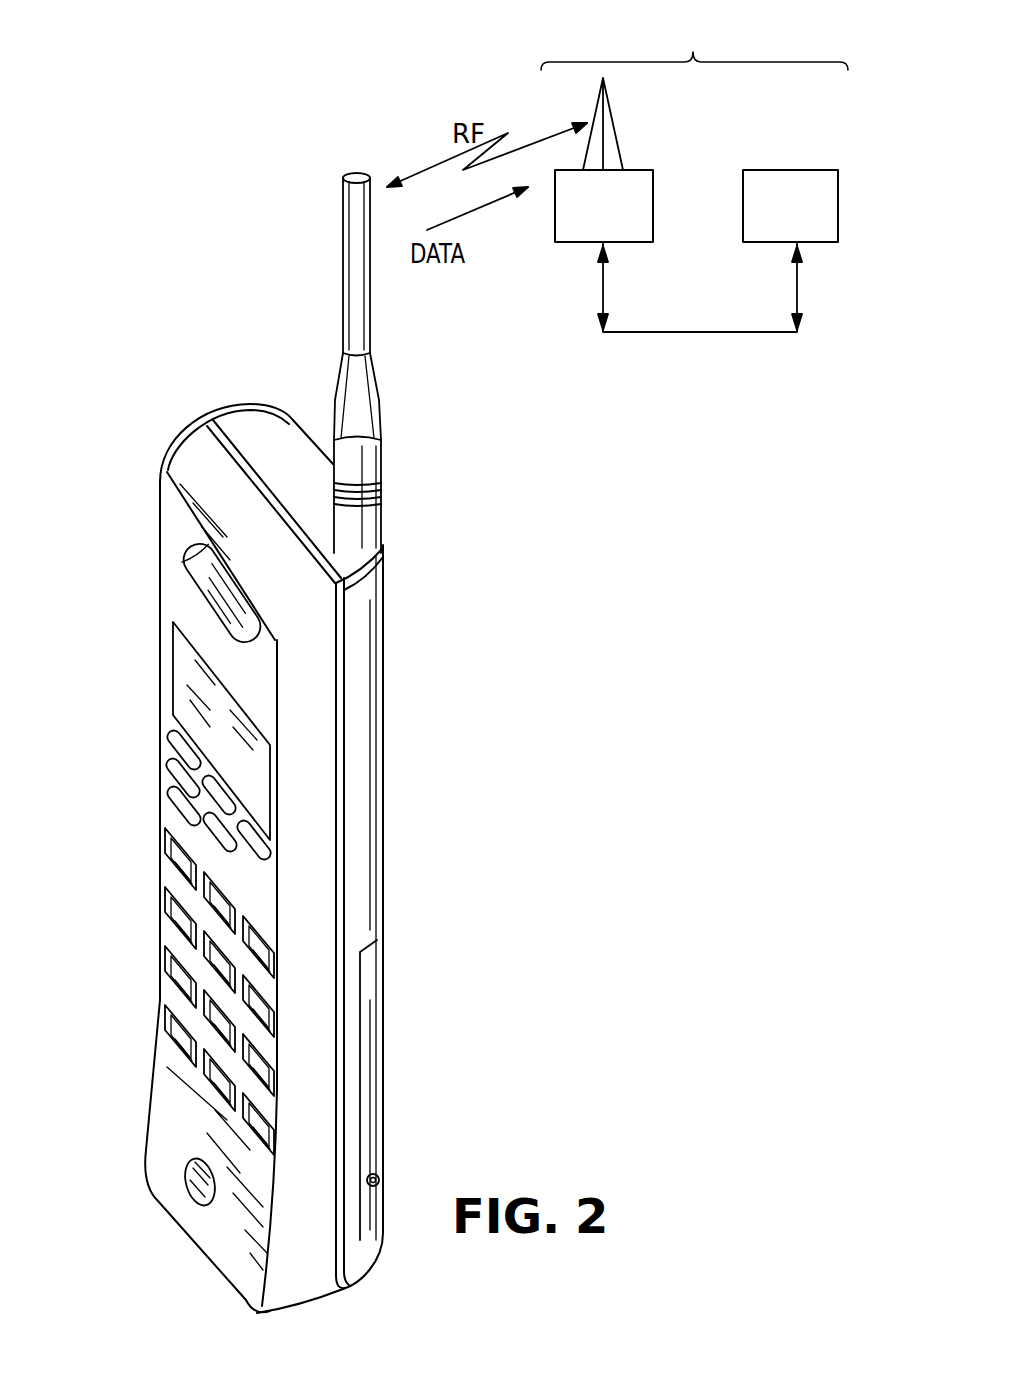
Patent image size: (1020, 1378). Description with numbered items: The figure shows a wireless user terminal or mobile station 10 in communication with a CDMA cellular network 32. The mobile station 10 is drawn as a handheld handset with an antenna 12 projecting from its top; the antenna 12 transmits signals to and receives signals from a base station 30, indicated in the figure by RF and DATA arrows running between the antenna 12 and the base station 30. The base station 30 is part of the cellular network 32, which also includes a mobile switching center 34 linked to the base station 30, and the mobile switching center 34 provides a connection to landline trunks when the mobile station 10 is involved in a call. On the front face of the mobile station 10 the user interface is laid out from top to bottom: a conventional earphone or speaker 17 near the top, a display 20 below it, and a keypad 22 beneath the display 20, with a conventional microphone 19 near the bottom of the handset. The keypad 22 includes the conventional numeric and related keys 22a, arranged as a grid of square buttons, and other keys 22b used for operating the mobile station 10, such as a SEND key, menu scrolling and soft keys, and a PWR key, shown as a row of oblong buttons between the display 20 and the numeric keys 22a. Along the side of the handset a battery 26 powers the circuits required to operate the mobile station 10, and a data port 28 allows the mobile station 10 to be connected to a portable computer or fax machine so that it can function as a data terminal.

The mobile station 10 is at (138, 410).
The antenna 12 is at (344, 249).
The speaker 17 is at (207, 572).
The microphone 19 is at (193, 1190).
The display 20 is at (183, 684).
The keypad 22 is at (191, 941).
The numeric and related keys 22a is at (162, 1000).
The other keys 22b is at (222, 799).
The battery 26 is at (385, 1065).
The data port 28 is at (375, 1174).
The base station 30 is at (637, 170).
The cellular network 32 is at (694, 45).
The mobile switching center 34 is at (771, 170).